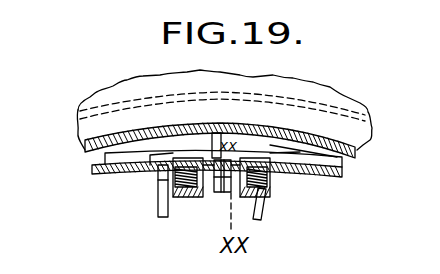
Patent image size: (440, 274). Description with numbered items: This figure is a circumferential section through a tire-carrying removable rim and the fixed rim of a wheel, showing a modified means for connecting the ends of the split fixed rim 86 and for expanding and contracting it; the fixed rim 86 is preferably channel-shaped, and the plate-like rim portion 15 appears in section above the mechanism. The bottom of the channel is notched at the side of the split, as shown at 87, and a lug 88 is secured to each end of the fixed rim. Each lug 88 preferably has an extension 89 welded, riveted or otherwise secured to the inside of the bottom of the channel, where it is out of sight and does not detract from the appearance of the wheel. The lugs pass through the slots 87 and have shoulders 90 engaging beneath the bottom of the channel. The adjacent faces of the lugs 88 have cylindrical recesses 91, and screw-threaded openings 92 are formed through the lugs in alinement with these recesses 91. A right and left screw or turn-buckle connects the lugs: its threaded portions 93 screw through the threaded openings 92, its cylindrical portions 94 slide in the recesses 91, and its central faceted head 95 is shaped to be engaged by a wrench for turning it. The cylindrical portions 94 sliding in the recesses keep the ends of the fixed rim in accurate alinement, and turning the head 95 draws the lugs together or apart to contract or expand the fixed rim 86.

The plate 15 is at (88, 146).
The fixed rim 86 is at (352, 178).
The notch 87 is at (208, 128).
The lug 88 is at (263, 128).
The extension 89 is at (97, 166).
The shoulder 90 is at (280, 170).
The cylindrical recess 91 is at (312, 128).
The screw-threaded opening 92 is at (174, 180).
The threaded portion 93 is at (170, 190).
The cylindrical portion 94 is at (190, 128).
The central head 95 is at (215, 198).